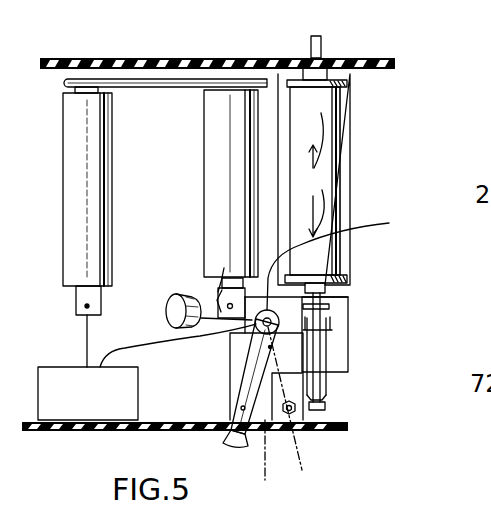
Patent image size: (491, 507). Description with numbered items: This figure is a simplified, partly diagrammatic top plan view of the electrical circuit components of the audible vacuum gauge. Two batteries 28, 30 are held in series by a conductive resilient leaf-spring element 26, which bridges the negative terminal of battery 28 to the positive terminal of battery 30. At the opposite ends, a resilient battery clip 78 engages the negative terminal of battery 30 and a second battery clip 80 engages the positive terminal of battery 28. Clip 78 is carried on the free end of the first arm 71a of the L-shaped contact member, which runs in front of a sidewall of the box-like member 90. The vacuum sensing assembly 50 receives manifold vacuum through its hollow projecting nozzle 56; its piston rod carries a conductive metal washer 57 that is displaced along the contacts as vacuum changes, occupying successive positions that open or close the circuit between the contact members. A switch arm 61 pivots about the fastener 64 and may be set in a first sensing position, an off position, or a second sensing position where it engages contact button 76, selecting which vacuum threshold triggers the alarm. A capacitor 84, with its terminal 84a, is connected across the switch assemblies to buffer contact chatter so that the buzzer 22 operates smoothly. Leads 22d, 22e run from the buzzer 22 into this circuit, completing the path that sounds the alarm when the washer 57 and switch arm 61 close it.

The buzzer 22 is at (138, 393).
The buzzer lead wire 22d is at (87, 343).
The buzzer lead wire 22e is at (136, 345).
The conductive resilient leaf-spring element 26 is at (180, 88).
The battery 28 is at (100, 162).
The battery 30 is at (216, 190).
The vacuum sensing assembly 50 is at (363, 101).
The hollow projecting nozzle 56 is at (322, 42).
The metal washer 57 is at (340, 302).
The switch arm 61 is at (248, 382).
The fastener 64 is at (336, 326).
The first arm of contact member 71a is at (343, 272).
The contact button 76 is at (288, 400).
The resilient battery clip 78 is at (216, 295).
The second battery clip 80 is at (78, 298).
The capacitor 84 is at (166, 304).
The capacitor terminal 84a is at (226, 270).
The box-like member 90 is at (351, 160).